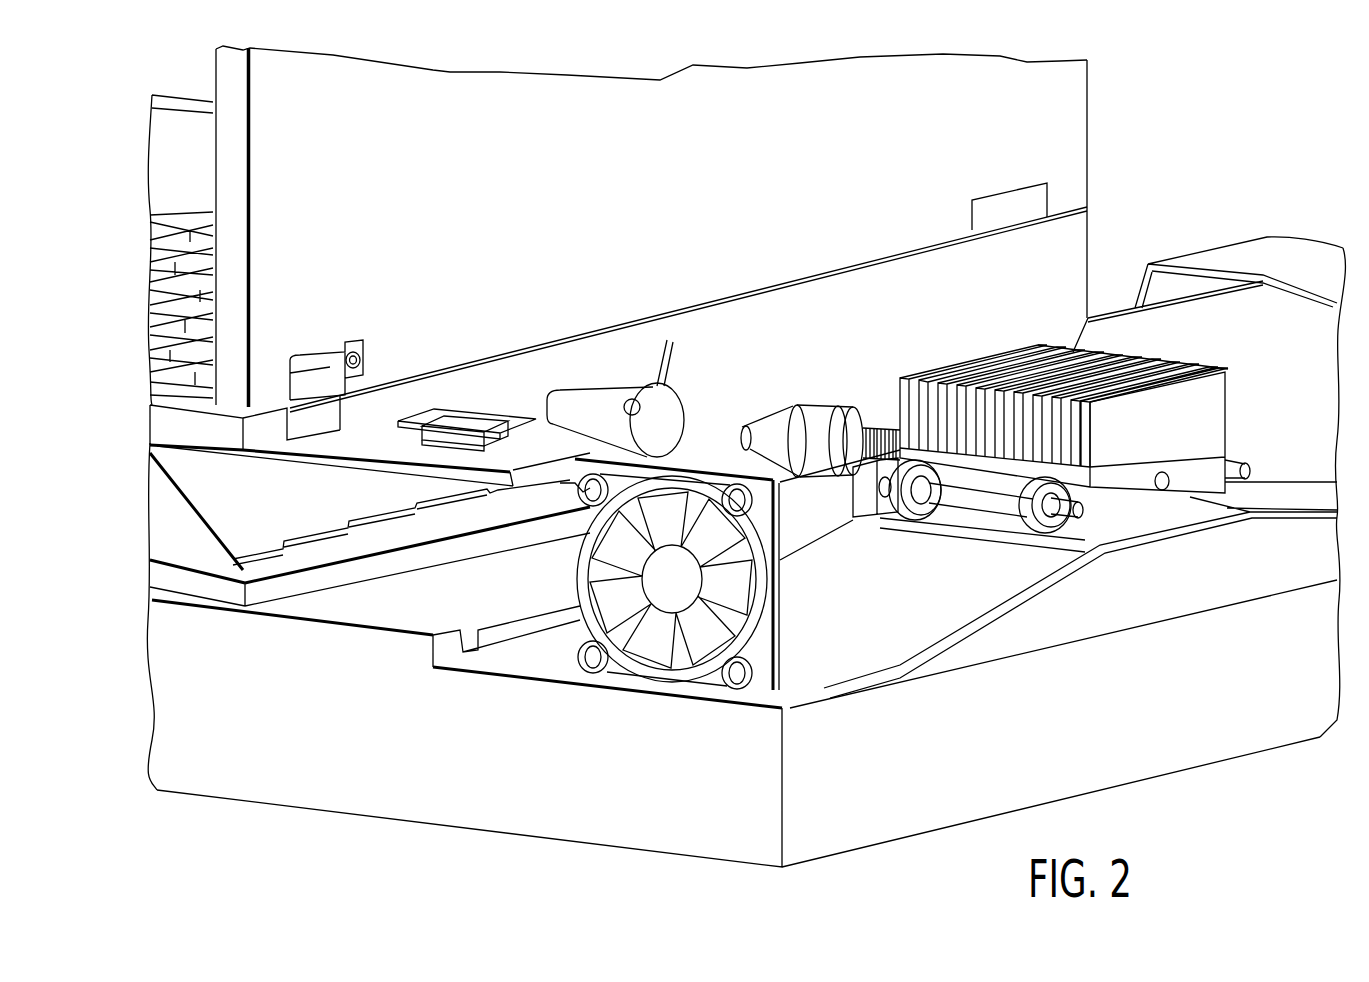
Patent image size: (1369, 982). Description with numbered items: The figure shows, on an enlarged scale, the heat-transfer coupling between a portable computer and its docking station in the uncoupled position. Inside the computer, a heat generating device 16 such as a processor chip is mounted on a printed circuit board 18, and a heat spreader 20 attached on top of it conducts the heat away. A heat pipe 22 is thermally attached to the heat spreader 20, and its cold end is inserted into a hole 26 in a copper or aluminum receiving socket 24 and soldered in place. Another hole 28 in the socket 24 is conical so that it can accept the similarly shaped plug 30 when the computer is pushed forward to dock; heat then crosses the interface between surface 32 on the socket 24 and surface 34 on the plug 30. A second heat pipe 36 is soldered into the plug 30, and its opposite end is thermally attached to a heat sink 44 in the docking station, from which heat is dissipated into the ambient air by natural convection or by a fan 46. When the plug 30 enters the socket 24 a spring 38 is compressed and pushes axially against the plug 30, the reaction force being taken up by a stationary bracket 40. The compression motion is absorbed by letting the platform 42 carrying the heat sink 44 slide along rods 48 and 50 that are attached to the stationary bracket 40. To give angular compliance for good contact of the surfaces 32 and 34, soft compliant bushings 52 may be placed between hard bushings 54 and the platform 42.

The heat generating device 16 is at (465, 437).
The printed circuit board 18 is at (383, 462).
The heat spreader 20 is at (433, 417).
The heat pipe 22 is at (527, 402).
The receiving socket 24 is at (590, 383).
The hole 26 is at (633, 397).
The hole 28 is at (680, 360).
The plug 30 is at (830, 405).
The surface 32 is at (663, 423).
The surface 34 is at (773, 427).
The second heat pipe 36 is at (1162, 491).
The spring 38 is at (880, 425).
The stationary bracket 40 is at (862, 520).
The platform 42 is at (1190, 500).
The heat sink 44 is at (1190, 367).
The fan 46 is at (680, 637).
The rod 48 is at (983, 503).
The rod 50 is at (1242, 463).
The soft compliant bushings 52 is at (1047, 533).
The hard bushings 54 is at (1058, 520).